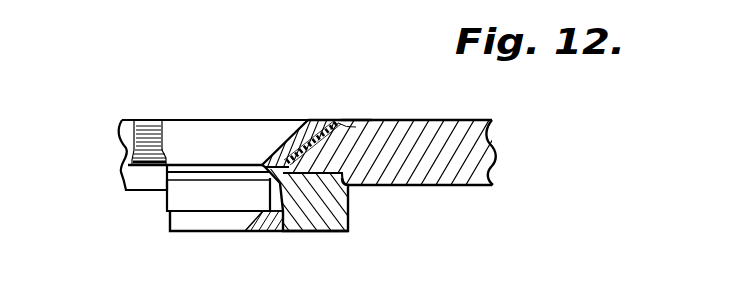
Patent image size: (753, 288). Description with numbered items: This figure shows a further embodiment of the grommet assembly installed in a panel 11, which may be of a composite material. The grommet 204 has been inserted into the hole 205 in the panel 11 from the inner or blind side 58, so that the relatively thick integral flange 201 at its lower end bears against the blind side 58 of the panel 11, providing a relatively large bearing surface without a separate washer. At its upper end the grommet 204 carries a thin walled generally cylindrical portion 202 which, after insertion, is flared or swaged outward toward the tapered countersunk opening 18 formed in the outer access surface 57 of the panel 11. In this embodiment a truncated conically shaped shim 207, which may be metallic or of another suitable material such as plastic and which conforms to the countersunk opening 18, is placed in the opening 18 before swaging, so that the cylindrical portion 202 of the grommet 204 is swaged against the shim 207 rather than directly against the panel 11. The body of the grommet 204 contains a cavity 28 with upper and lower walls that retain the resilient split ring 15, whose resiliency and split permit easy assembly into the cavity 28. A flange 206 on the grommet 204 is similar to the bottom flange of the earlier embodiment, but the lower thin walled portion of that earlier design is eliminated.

The panel 11 is at (477, 150).
The ring 15 is at (187, 202).
The countersunk opening 18 is at (357, 120).
The cavity 28 is at (276, 202).
The outer access surface 57 is at (470, 119).
The inner or blind side 58 is at (470, 186).
The integral flange 201 is at (348, 231).
The thin walled generally cylindrical portion 202 is at (290, 144).
The grommet 204 is at (261, 148).
The hole 205 is at (360, 186).
The flange 206 is at (237, 233).
The truncated conically shaped shim 207 is at (325, 120).